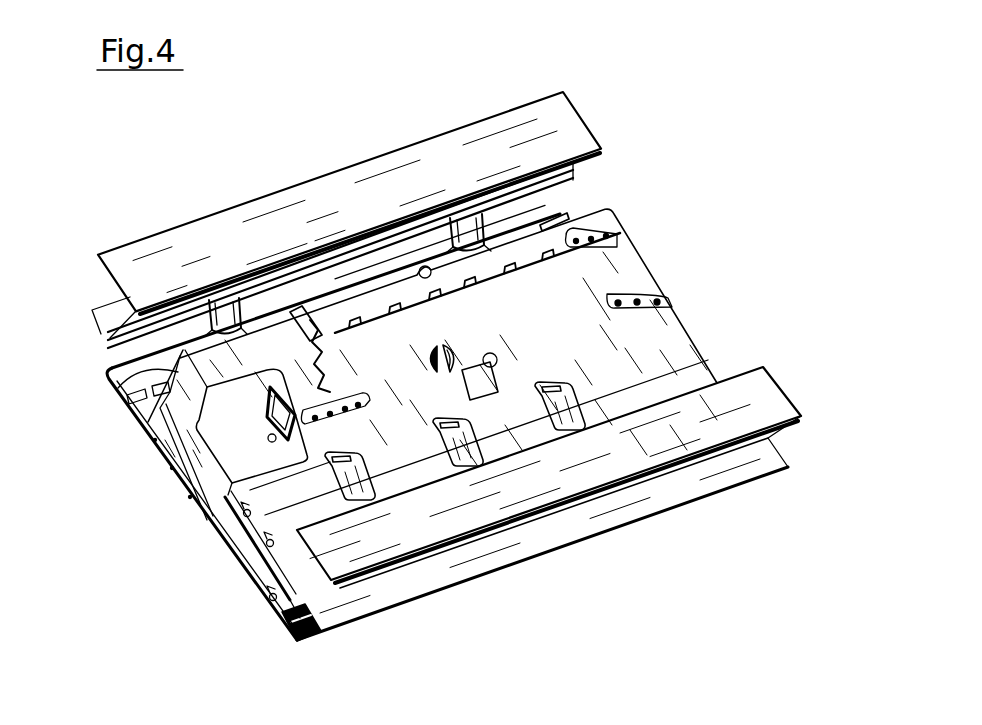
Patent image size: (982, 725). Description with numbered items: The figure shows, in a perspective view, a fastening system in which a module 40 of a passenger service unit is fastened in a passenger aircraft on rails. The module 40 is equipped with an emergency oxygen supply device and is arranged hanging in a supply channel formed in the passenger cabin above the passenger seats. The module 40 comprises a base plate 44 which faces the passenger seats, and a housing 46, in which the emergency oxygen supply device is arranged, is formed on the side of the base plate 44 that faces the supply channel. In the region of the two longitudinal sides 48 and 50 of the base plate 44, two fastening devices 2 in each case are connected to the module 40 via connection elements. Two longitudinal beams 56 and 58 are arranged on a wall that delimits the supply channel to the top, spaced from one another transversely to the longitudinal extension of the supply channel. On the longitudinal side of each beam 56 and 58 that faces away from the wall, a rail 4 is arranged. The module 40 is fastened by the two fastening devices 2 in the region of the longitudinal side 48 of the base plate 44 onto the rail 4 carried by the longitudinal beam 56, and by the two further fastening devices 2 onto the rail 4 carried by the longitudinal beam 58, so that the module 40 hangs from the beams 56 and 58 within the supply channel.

The fastening device 2 is at (237, 297).
The rail 4 is at (574, 178).
The module 40 is at (214, 550).
The base plate 44 is at (185, 502).
The housing 46 is at (560, 342).
The longitudinal side 48 is at (107, 367).
The longitudinal side 50 is at (318, 636).
The longitudinal beam 56 is at (569, 128).
The longitudinal beam 58 is at (760, 406).